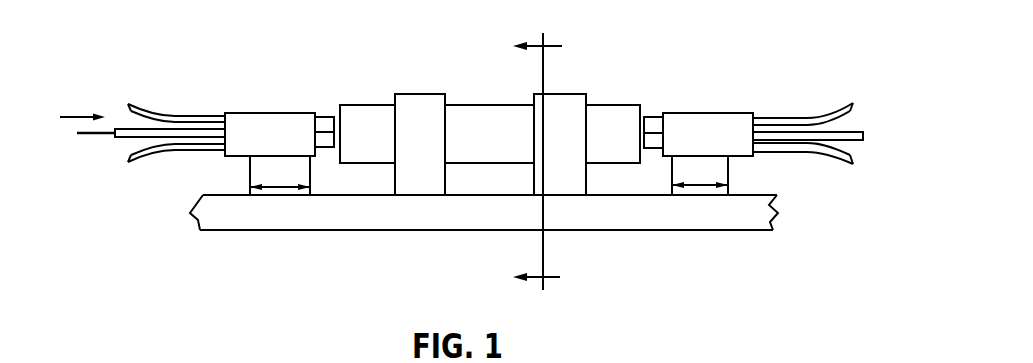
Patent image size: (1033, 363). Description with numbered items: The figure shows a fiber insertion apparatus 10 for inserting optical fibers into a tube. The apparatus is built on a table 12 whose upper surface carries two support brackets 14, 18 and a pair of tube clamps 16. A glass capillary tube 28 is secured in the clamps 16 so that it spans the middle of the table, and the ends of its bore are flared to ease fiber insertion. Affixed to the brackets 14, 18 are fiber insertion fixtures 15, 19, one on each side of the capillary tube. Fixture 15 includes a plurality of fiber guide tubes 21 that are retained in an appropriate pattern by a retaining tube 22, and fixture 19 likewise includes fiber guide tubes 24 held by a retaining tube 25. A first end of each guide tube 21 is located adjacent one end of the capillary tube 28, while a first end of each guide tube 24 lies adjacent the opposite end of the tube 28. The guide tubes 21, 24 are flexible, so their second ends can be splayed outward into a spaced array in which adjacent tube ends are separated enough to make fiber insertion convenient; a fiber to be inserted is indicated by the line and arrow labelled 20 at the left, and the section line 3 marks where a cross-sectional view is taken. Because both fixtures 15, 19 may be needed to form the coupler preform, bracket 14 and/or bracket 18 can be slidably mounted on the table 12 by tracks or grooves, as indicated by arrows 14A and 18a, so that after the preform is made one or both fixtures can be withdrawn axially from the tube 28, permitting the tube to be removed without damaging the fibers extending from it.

The fiber insertion apparatus 10 is at (730, 239).
The table 12 is at (363, 217).
The support bracket 14 is at (257, 172).
The arrow 14A is at (280, 182).
The fiber insertion fixture 15 is at (298, 97).
The tube clamps 16 is at (427, 188).
The support bracket 18 is at (720, 177).
The arrow 18a is at (703, 180).
The fiber insertion fixture 19 is at (708, 88).
The input optical fiber 20 is at (93, 135).
The fiber guide tubes 21 is at (197, 98).
The retaining tube 22 is at (247, 114).
The fiber guide tubes 24 is at (829, 172).
The retaining tube 25 is at (677, 113).
The glass capillary tube 28 is at (372, 105).
The section line 3- 3 is at (550, 163).